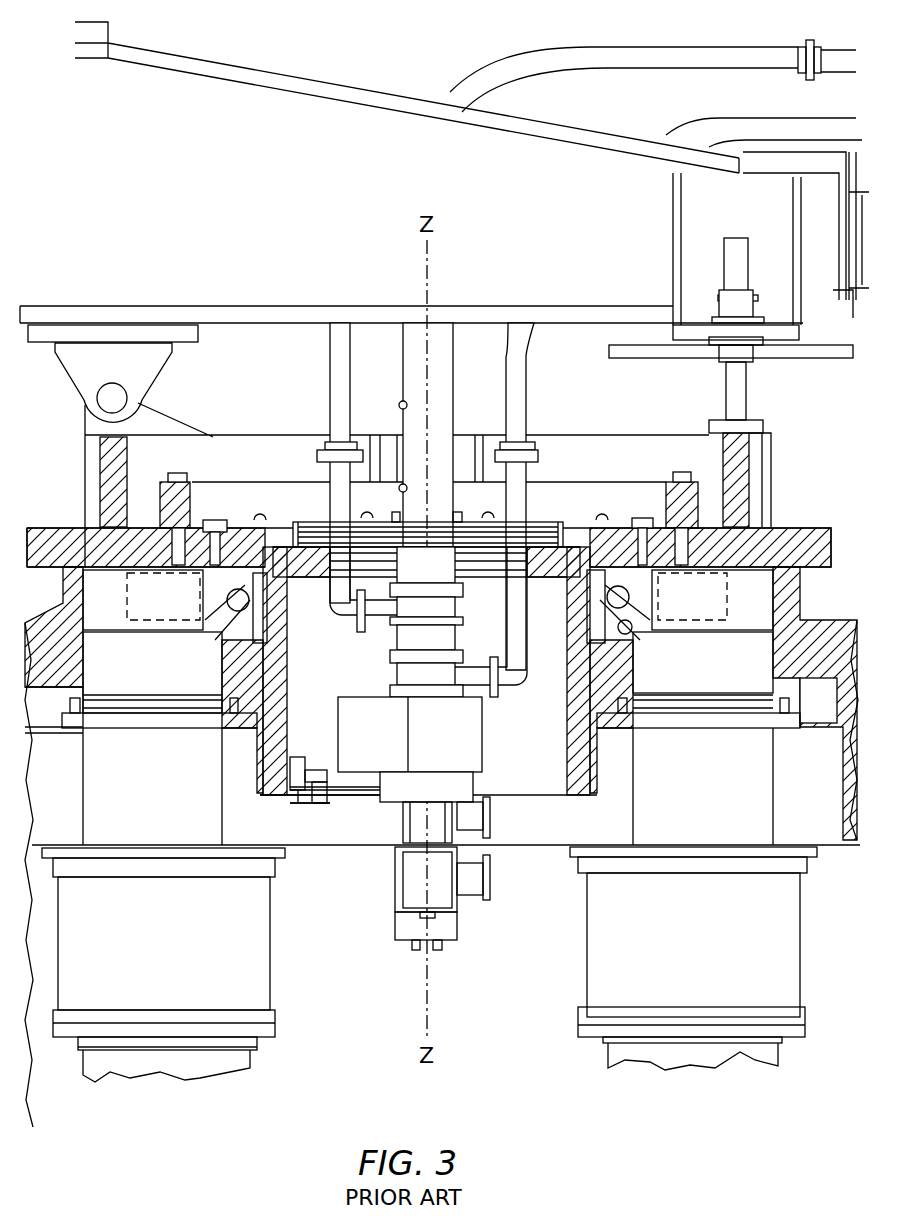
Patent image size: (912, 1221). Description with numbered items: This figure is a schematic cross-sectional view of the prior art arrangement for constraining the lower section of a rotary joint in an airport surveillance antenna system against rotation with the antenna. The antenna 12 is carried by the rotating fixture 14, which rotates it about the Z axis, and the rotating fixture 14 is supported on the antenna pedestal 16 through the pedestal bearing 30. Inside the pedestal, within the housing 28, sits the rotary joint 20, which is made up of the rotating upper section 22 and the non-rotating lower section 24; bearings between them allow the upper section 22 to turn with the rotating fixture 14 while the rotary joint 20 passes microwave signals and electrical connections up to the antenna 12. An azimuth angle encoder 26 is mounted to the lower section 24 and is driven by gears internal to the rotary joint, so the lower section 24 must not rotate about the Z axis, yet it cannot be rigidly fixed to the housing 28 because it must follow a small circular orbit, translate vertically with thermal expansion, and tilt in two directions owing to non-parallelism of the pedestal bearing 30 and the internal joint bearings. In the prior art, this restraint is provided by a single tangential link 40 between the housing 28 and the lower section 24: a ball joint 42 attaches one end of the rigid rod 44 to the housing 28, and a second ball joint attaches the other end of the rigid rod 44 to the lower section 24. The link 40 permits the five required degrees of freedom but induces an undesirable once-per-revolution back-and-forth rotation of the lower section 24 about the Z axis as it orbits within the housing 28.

The antenna 12 is at (217, 103).
The rotating fixture 14 is at (796, 527).
The antenna pedestal 16 is at (803, 613).
The rotary joint 20 is at (485, 727).
The rotating upper section 22 is at (405, 632).
The non-rotating lower section 24 is at (468, 783).
The encoder 26 is at (410, 884).
The housing 28 is at (290, 682).
The pedestal bearing 30 is at (620, 604).
The tangential link 40 is at (337, 824).
The ball joint 42 is at (315, 803).
The rigid rod 44 is at (357, 792).